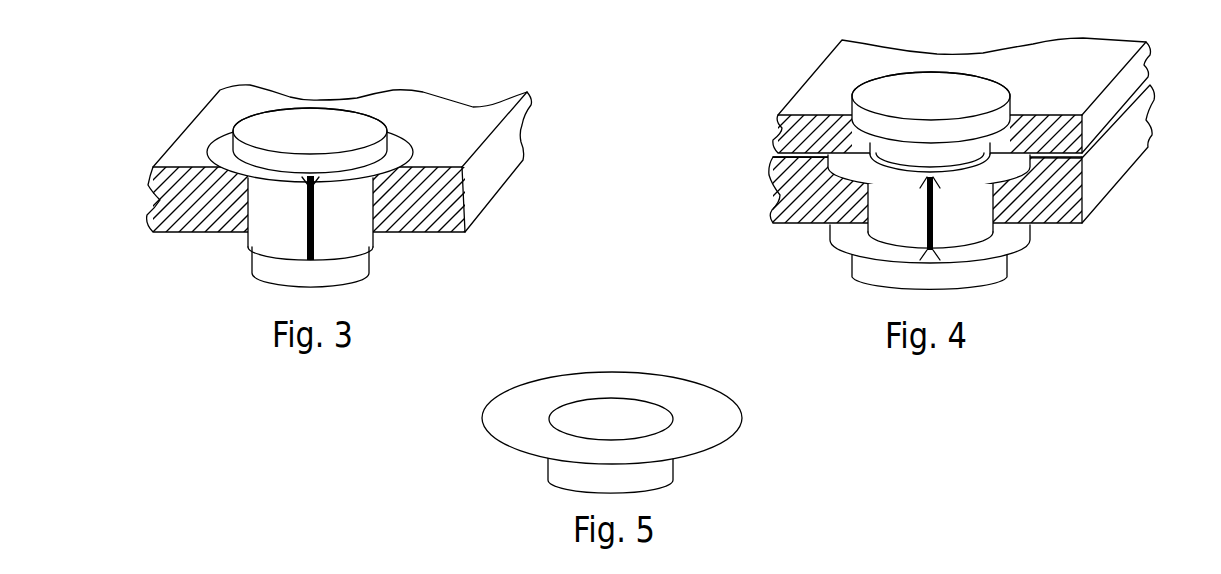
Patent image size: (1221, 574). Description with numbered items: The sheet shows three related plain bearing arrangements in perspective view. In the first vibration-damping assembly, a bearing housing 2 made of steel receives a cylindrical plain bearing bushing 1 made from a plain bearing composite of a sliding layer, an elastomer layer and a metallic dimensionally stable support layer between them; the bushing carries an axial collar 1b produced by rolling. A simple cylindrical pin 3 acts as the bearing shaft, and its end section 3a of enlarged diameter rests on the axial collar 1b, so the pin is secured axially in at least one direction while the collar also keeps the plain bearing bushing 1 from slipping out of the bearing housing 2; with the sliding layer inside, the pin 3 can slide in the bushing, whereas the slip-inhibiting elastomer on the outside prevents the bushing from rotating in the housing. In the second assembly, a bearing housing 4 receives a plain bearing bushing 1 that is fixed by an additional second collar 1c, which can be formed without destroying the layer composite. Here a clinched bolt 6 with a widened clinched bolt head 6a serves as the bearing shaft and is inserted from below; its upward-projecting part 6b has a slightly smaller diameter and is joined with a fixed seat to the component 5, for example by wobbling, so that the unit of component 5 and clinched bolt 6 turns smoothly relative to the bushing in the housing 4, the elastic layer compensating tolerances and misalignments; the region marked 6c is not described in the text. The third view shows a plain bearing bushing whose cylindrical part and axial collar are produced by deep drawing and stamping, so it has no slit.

In FIG. 3, the plain bearing bushing 1 is at (272, 172).
In FIG. 4, the plain bearing bushing 1 is at (1001, 226).
In FIG. 3, the axial collar 1b is at (223, 152).
In FIG. 4, the axial collar 1b is at (997, 170).
In FIG. 4, the second collar 1c is at (1003, 233).
In FIG. 3, the bearing housing 2 is at (438, 115).
In FIG. 3, the cylindrical pin 3 is at (268, 263).
In FIG. 3, the end section 3a is at (328, 115).
In FIG. 4, the bearing housing 4 is at (1133, 142).
In FIG. 4, the component 5 is at (1078, 63).
In FIG. 4, the clinched bolt 6 is at (940, 149).
In FIG. 4, the clinched bolt head 6a is at (868, 265).
In FIG. 4, the projecting part of the clinched bolt 6b is at (890, 153).
In FIG. 4, the sleeve head 6c is at (885, 132).